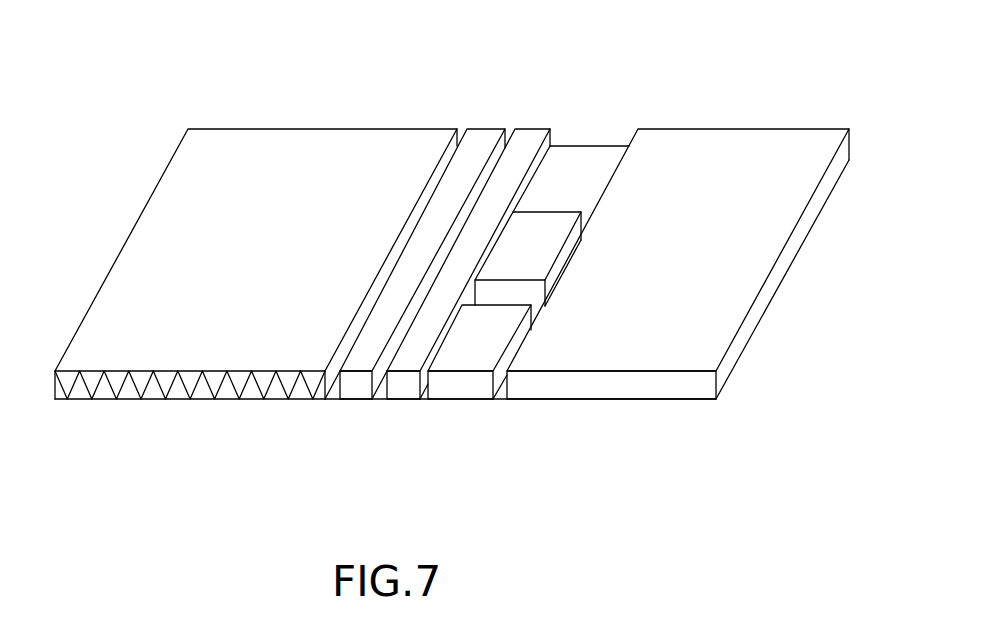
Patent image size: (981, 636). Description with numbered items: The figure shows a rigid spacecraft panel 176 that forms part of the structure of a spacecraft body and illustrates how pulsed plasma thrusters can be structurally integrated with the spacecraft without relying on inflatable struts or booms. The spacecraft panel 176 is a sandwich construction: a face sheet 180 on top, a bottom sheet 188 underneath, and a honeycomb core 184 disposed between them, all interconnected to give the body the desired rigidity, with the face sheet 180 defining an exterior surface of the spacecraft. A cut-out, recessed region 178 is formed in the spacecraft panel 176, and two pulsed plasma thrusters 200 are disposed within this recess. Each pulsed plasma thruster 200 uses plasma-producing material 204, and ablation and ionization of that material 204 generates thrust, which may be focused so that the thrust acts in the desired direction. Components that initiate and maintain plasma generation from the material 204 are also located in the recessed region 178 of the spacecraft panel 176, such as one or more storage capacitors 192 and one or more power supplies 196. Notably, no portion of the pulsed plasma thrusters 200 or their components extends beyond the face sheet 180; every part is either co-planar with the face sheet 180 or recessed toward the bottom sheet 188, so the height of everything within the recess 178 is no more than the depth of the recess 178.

The spacecraft panel 176 is at (385, 275).
The cut-out recessed region 178 is at (595, 129).
The face sheet 180 is at (151, 265).
The honeycomb core 184 is at (83, 399).
The bottom sheet 188 is at (153, 399).
The storage capacitor 192 is at (475, 352).
The power supply 196 is at (537, 255).
The pulsed plasma thruster 200 is at (407, 355).
The plasma-producing material 204 is at (448, 241).